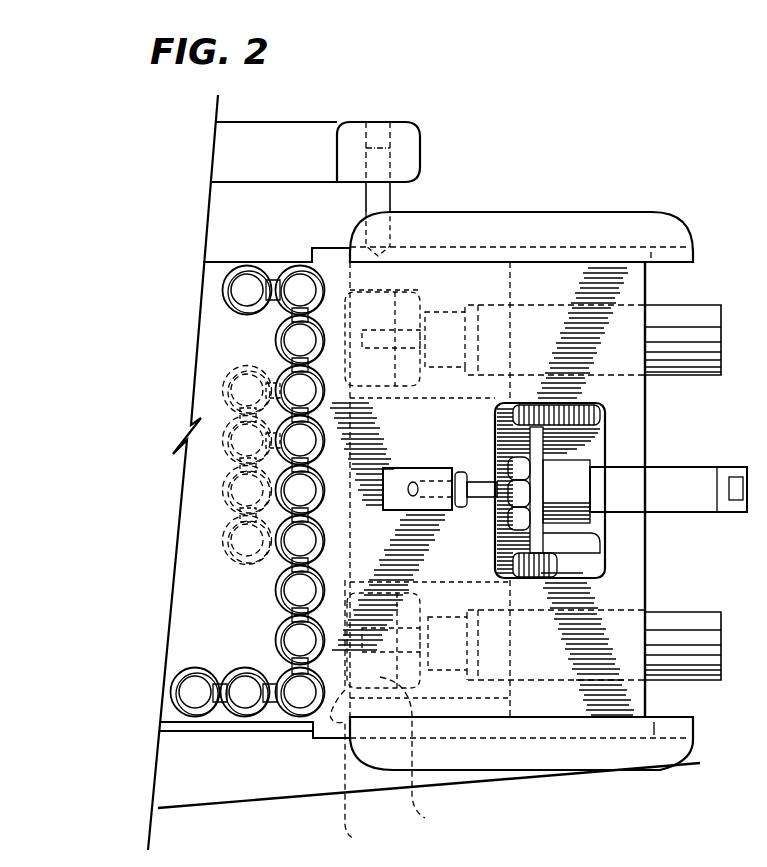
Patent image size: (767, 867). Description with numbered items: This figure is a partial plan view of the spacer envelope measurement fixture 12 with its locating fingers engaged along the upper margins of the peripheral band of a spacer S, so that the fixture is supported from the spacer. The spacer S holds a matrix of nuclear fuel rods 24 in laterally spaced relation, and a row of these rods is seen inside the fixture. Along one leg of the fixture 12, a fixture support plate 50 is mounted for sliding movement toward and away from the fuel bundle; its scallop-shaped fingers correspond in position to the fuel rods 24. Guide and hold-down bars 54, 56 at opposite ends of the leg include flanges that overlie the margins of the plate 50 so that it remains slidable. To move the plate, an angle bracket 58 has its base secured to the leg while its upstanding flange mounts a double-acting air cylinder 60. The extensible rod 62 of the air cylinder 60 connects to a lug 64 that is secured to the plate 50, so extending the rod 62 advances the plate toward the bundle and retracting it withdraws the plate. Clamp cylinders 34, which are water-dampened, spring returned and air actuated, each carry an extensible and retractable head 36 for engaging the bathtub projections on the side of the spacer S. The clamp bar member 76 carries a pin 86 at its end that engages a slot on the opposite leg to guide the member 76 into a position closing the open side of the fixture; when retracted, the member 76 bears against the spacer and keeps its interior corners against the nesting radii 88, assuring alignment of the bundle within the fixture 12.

The fixture 12 is at (220, 788).
The nuclear fuel rods 24 is at (250, 283).
The clamp cylinders 34 is at (665, 377).
The head 36 is at (419, 757).
The plate 50 is at (633, 296).
The guide and hold-down bar 54 is at (558, 760).
The guide and hold-down bar 56 is at (533, 233).
The angle bracket 58 is at (538, 447).
The double-acting air cylinder 60 is at (627, 497).
The extensible rod 62 is at (485, 500).
The lug 64 is at (425, 472).
The clamp bar member 76 is at (422, 170).
The pin 86 is at (390, 200).
The nesting radii 88 is at (357, 715).
The spacer S is at (284, 255).